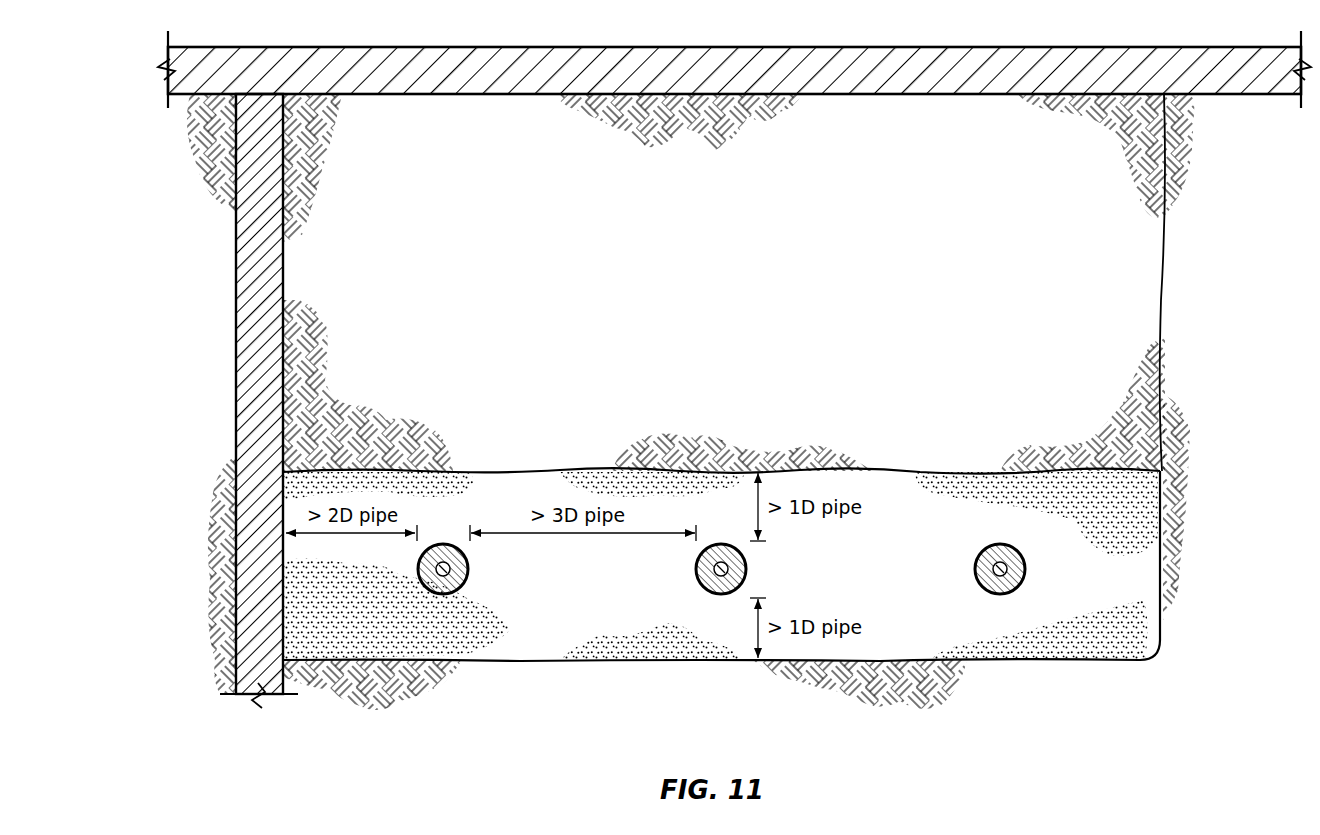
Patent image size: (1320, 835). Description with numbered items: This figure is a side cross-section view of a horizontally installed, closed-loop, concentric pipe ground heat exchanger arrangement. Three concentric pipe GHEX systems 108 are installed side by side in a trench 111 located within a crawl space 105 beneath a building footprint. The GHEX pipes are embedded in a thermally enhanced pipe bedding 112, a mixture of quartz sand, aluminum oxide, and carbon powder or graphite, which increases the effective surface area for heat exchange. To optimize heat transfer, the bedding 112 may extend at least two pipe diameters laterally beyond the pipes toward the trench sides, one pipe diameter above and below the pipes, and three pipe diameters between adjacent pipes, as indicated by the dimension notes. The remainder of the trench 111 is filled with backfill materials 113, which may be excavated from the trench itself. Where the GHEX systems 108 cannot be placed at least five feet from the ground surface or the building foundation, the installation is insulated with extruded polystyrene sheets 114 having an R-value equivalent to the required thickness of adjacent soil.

The crawl space 105 is at (698, 32).
The extruded polystyrene sheets 114 is at (748, 57).
The trench 111 is at (155, 100).
The backfill materials 113 is at (1100, 287).
The thermally enhanced pipe bedding 112 is at (1125, 577).
The concentric pipe GHEX system 108 is at (469, 570).